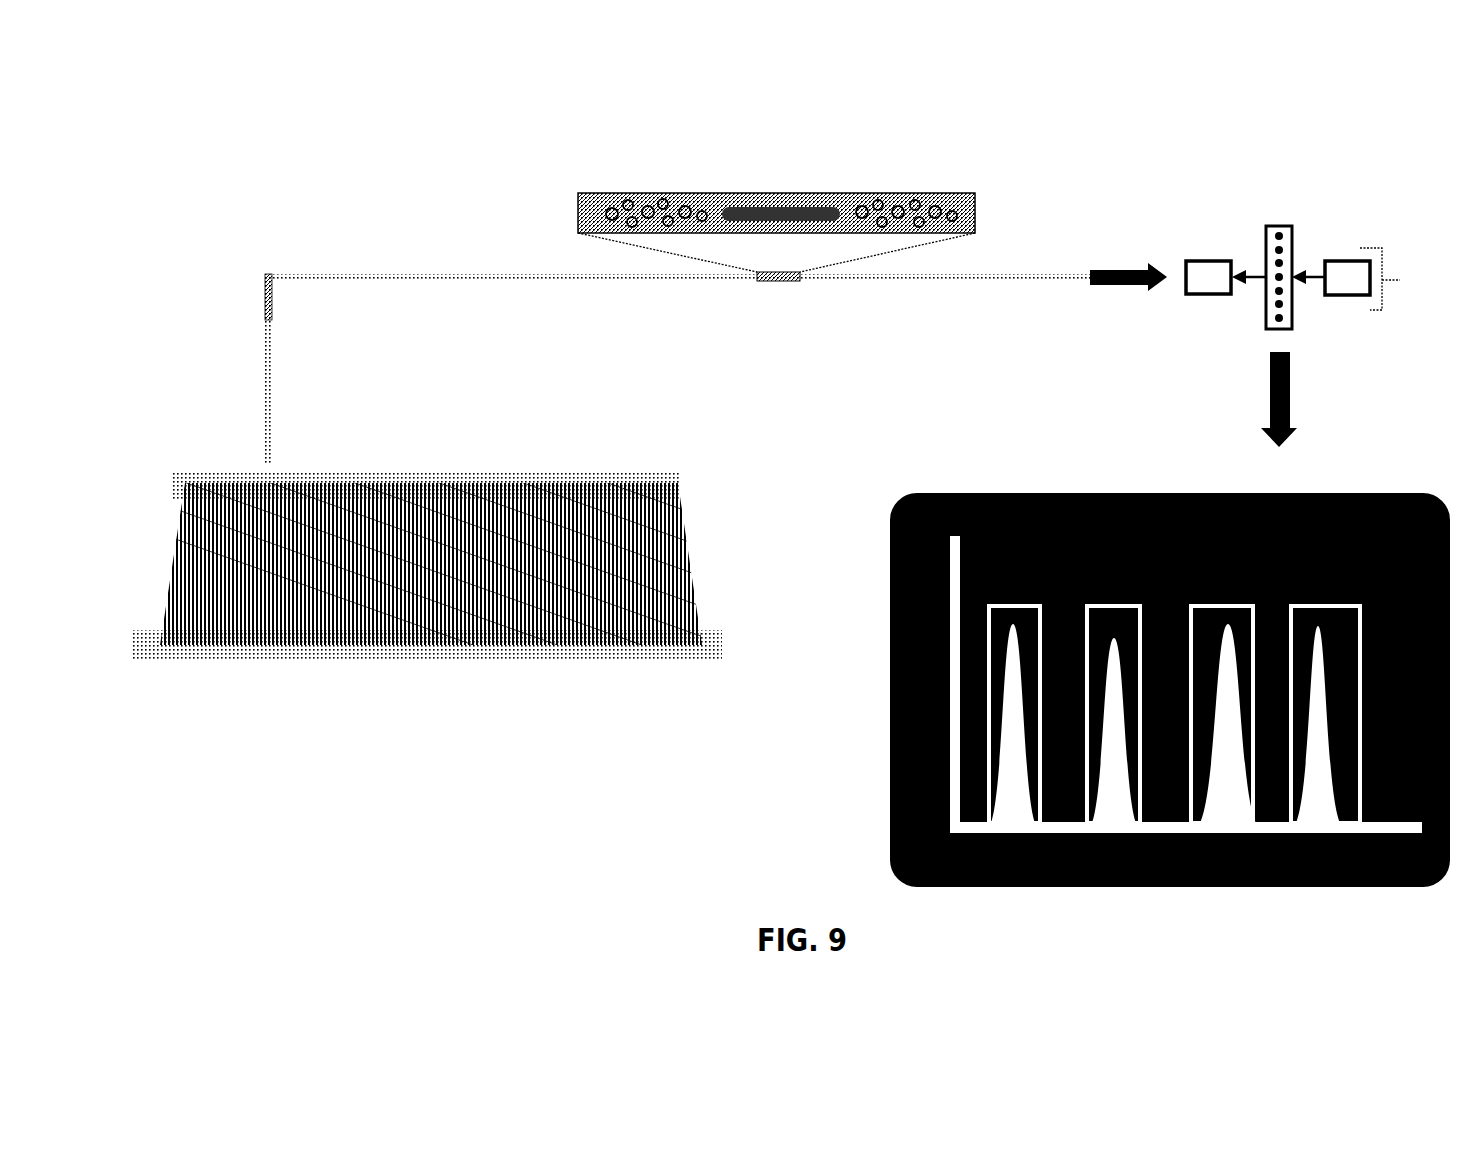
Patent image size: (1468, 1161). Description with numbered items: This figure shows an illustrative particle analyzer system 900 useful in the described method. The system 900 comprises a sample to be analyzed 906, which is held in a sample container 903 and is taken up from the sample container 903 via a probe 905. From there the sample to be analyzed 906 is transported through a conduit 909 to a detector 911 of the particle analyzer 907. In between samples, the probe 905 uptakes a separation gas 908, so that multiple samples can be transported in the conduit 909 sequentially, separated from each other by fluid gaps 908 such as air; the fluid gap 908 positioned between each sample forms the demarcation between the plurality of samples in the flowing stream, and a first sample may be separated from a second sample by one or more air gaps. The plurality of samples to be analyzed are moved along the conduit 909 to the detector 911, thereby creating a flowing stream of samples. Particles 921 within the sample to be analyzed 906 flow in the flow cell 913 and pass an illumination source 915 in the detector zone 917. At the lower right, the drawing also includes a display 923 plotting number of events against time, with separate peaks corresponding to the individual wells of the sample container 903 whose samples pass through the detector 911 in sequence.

The system 900 is at (346, 172).
The sample container 903 is at (668, 698).
The probe 905 is at (270, 391).
The sample to be analyzed 906 is at (895, 183).
The particle analyzer 907 is at (1211, 223).
The separation gas / fluid gap 908 is at (779, 192).
The conduit 909 is at (334, 274).
The detector 911 is at (1202, 296).
The flow cell 913 is at (1278, 225).
The illumination source 915 is at (1347, 297).
The detector zone 917 is at (1407, 279).
The particles 921 is at (1300, 229).
The event histogram display 923 is at (992, 492).